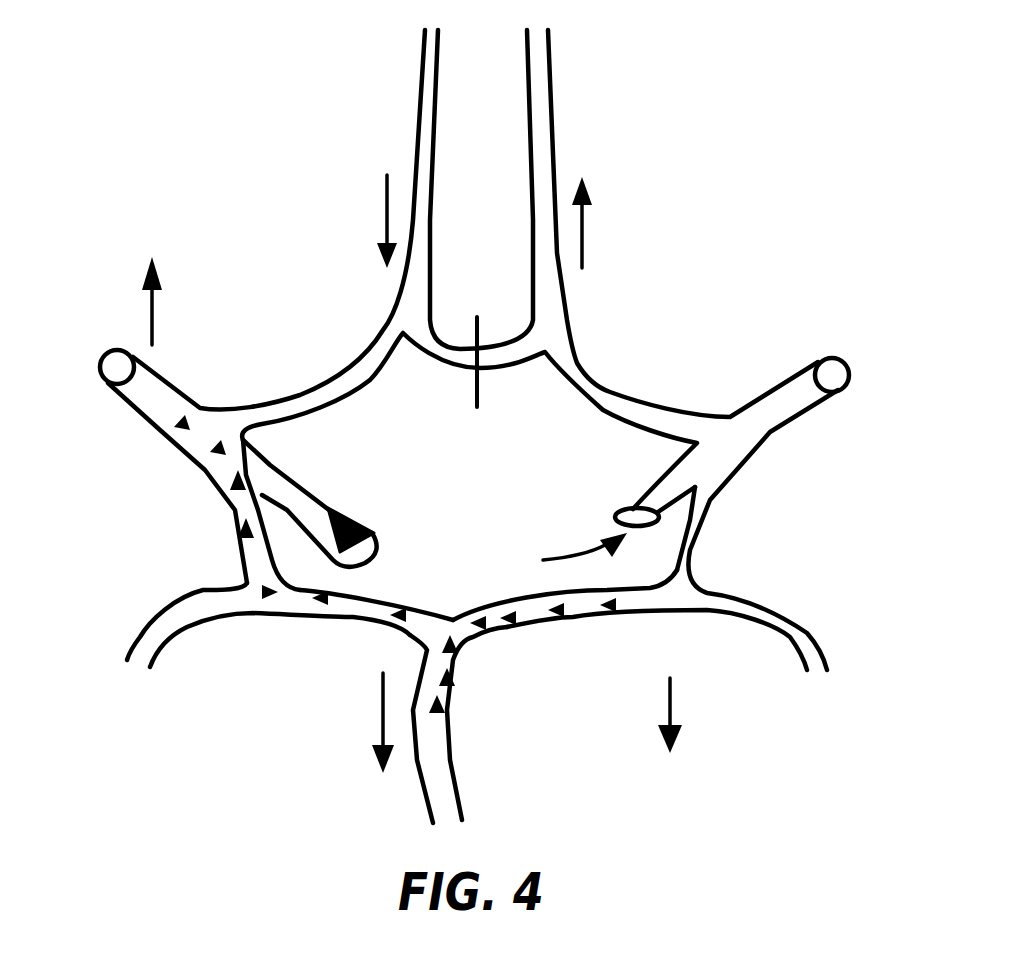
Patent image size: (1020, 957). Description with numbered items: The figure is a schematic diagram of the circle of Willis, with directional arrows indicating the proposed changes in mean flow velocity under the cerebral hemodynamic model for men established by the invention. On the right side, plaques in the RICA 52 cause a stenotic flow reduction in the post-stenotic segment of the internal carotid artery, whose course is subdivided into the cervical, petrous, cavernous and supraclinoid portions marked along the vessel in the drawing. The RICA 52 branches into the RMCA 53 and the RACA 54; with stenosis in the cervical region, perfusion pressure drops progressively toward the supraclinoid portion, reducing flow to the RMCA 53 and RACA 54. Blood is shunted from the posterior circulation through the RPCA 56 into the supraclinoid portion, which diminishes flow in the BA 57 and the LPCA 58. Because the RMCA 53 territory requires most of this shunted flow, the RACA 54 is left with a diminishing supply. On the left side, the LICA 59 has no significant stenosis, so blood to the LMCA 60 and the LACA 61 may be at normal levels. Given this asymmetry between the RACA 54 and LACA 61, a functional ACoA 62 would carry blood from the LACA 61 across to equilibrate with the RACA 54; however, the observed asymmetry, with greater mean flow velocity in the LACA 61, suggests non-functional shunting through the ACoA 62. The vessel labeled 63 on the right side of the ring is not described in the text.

The RICA 52 is at (330, 518).
The RMCA 53 is at (138, 363).
The RACA 54 is at (423, 127).
The RPCA 56 is at (350, 620).
The BA 57 is at (413, 783).
The LPCA 58 is at (597, 620).
The LICA 59 is at (633, 510).
The LMCA 60 is at (808, 357).
The LACA 61 is at (555, 132).
The ACoA 62 is at (490, 337).
The internal carotid artery (right) 63 is at (707, 523).